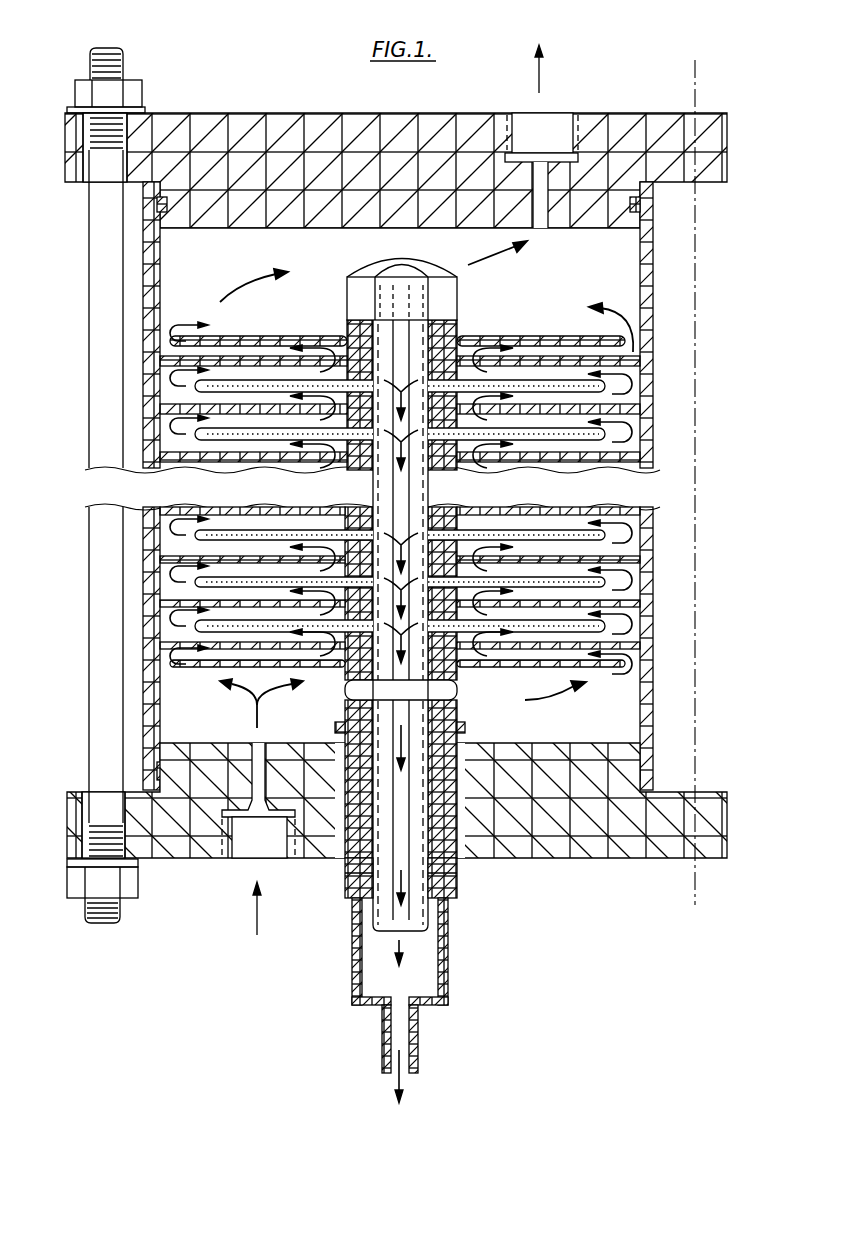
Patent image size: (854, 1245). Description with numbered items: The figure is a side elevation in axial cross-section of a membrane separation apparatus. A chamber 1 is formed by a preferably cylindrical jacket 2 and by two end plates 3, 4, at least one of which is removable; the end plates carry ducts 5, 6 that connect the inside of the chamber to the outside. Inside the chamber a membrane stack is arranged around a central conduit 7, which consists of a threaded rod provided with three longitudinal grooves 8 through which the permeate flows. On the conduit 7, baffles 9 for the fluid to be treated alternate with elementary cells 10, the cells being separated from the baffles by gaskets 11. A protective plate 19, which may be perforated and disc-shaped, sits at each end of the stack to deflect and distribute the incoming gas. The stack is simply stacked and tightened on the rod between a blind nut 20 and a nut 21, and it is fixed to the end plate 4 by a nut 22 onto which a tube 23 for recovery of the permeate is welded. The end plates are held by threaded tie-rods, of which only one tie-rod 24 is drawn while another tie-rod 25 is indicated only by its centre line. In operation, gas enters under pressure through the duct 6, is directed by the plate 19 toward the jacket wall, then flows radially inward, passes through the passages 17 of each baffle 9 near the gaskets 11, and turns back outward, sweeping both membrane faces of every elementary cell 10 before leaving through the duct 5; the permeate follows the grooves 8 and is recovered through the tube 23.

The chamber 1 is at (605, 255).
The jacket 2 is at (645, 300).
The end plate 3 is at (640, 157).
The end plate 4 is at (75, 830).
The duct 5 is at (535, 135).
The duct 6 is at (255, 840).
The central conduit 7 is at (417, 354).
The longitudinal grooves 8 is at (400, 375).
The baffles 9 is at (595, 457).
The elementary cells 10 is at (605, 535).
The gaskets 11 is at (465, 520).
The passages 17 is at (483, 562).
The protective plate 19 is at (507, 663).
The blind nut 20 is at (418, 270).
The nut 21 is at (348, 692).
The nut 22 is at (357, 890).
The tube 23 is at (344, 957).
The threaded tie-rod 24 is at (103, 760).
The threaded tie-rod 25 is at (693, 883).